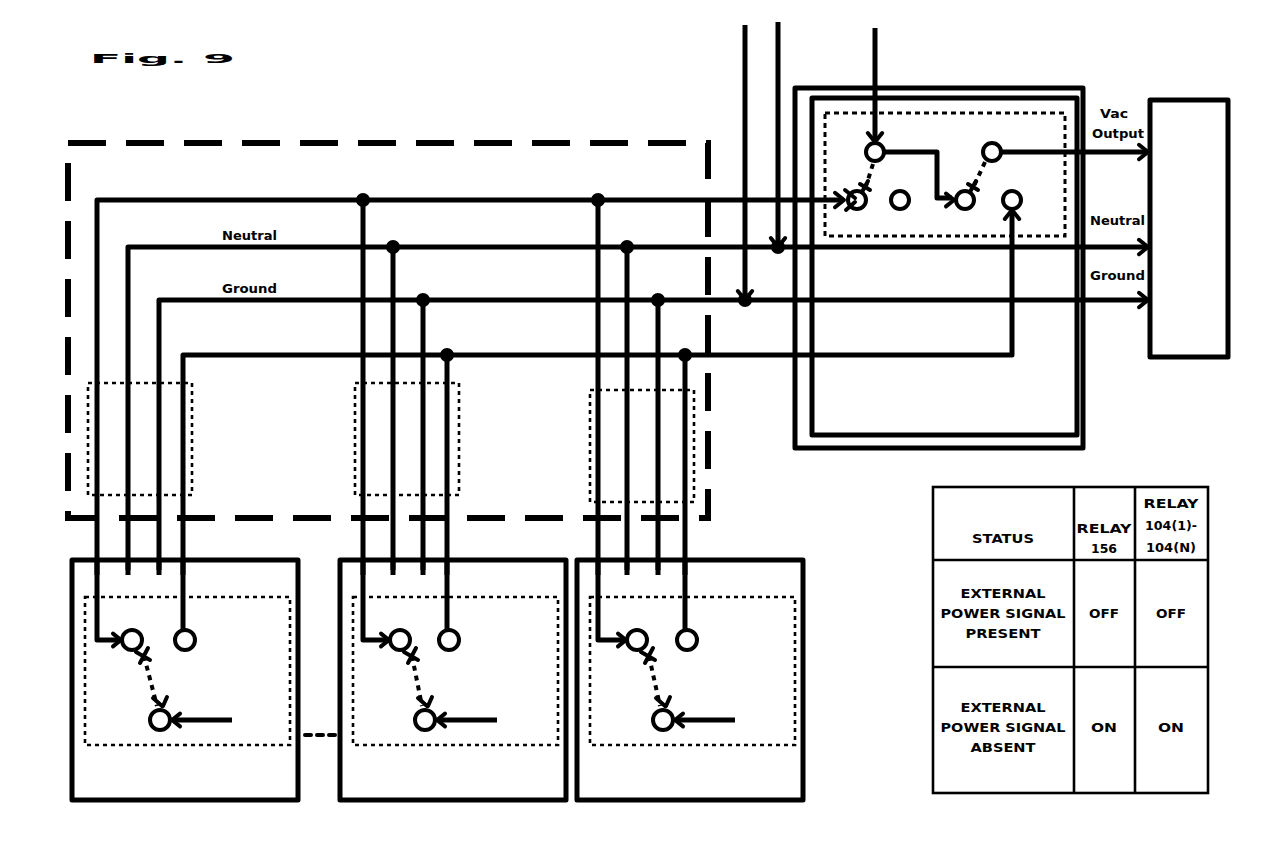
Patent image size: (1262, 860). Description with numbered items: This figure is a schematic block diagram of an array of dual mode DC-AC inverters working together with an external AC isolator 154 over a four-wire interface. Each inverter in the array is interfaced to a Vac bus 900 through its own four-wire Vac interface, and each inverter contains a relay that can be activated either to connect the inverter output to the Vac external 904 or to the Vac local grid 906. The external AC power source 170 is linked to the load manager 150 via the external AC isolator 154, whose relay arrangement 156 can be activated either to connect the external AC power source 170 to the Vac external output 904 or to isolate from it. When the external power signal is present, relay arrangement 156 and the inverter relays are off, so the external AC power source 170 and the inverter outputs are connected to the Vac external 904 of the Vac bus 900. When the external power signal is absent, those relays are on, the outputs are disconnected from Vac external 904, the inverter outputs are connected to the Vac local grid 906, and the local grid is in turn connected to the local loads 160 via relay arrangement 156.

The Vac bus 900 is at (388, 313).
The Vac external output 904 is at (470, 378).
The Vac local grid 906 is at (601, 392).
The external AC power source 170 is at (925, 158).
The load manager 150 is at (1000, 253).
The external AC isolator 154 is at (944, 266).
The relay arrangement 156 is at (1067, 110).
The local loads 160 is at (1189, 218).